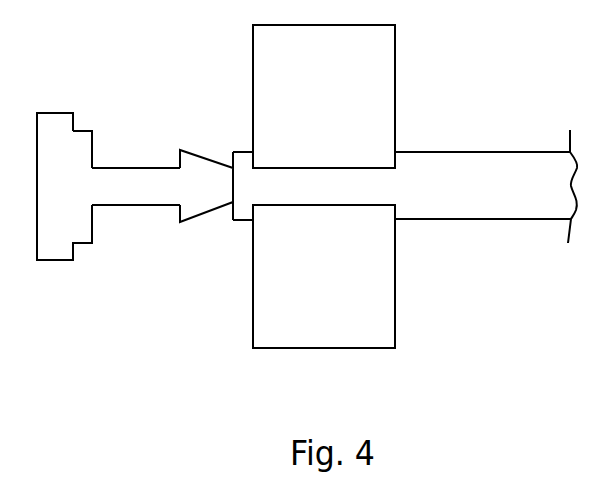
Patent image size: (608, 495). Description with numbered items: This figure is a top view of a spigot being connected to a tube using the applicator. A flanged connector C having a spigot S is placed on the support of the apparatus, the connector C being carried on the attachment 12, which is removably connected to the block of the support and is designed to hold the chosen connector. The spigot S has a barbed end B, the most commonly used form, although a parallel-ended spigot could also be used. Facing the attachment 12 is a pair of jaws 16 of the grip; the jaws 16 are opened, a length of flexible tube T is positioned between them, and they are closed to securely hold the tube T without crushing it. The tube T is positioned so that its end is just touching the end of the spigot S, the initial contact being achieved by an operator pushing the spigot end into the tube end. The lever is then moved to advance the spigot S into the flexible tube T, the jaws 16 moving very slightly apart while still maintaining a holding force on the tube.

The attachment 12 is at (52, 242).
The jaws 16 is at (356, 322).
The connector C is at (113, 206).
The spigot S is at (165, 197).
The barbed end B is at (213, 210).
The flexible tube T is at (477, 207).